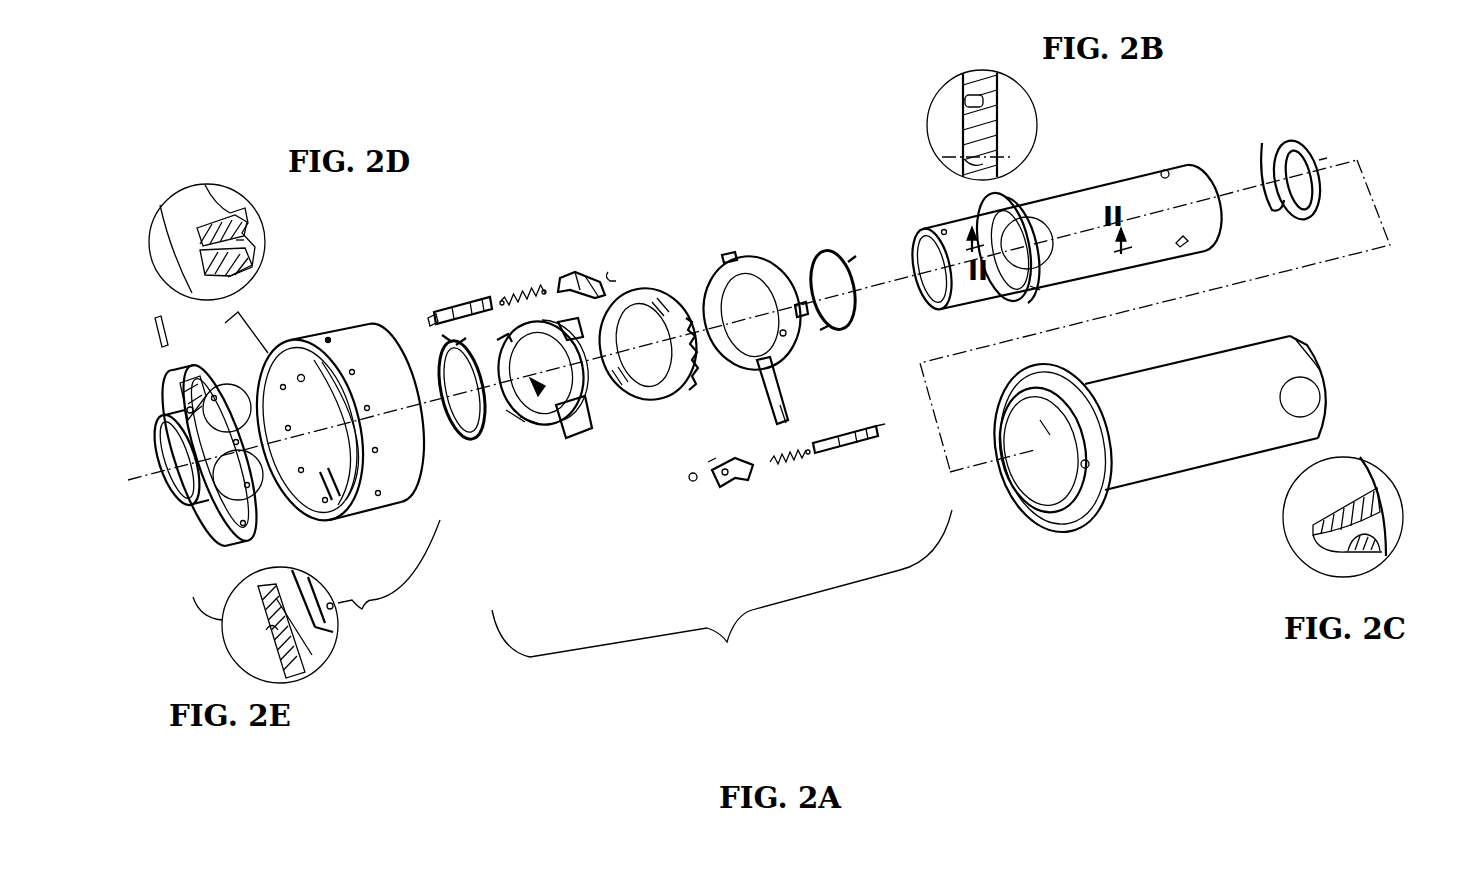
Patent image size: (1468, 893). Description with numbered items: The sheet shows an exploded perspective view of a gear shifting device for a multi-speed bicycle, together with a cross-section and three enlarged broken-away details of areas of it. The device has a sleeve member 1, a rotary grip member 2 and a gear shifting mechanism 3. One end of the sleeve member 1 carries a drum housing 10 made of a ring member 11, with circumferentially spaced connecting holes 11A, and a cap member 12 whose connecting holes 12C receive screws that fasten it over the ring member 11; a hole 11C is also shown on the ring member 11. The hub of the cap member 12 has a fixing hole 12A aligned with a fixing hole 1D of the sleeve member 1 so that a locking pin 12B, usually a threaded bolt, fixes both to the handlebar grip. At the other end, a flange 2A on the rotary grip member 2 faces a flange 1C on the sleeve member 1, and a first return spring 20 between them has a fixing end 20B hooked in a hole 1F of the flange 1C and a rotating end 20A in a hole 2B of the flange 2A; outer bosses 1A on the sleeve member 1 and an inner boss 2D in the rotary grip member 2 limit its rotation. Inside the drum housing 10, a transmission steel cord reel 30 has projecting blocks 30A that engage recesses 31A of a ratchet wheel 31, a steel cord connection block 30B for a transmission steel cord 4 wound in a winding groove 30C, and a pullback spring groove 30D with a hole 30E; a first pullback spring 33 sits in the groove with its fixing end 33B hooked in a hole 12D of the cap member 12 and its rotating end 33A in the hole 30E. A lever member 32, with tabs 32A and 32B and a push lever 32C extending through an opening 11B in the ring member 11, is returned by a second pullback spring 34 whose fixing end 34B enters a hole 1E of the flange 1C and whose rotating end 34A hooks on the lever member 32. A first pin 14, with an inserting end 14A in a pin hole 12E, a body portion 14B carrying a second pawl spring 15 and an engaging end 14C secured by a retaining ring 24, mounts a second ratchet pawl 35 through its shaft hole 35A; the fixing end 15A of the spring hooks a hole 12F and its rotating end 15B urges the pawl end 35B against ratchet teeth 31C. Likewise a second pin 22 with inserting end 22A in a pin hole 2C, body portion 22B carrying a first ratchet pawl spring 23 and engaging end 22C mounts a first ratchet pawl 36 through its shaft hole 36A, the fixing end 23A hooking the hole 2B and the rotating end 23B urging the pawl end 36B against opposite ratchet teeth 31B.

In FIG. 2A, the sleeve member 1 is at (1118, 187).
In FIG. 2A, the outer bosses 1A is at (1166, 170).
In FIG. 2A, the flange 1C is at (1032, 287).
In FIG. 2A, the fixing hole 1D is at (943, 229).
In FIG. 2A, the hole 1E is at (1022, 203).
In FIG. 2B, the hole 1E is at (976, 96).
In FIG. 2A, the hole 1F is at (1040, 250).
In FIG. 2B, the hole 1F is at (955, 157).
In FIG. 2A, the rotary grip member 2 is at (1188, 470).
In FIG. 2A, the flange 2A is at (1096, 432).
In FIG. 2A, the hole 2B is at (1042, 500).
In FIG. 2A, the pin hole 2C is at (1088, 469).
In FIG. 2A, the inner boss 2D is at (1307, 383).
In FIG. 2C, the inner boss 2D is at (1385, 553).
In FIG. 2A, the gear shifting mechanism 3 is at (722, 593).
In FIG. 2A, the transmission steel cord 4 is at (247, 327).
In FIG. 2A, the drum housing 10 is at (316, 586).
In FIG. 2A, the ring member 11 is at (396, 500).
In FIG. 2A, the connecting holes 11A is at (328, 340).
In FIG. 2A, the opening 11B is at (332, 505).
In FIG. 2A, the housing hole 11C is at (300, 374).
In FIG. 2A, the cap member 12 is at (200, 516).
In FIG. 2A, the fixing hole 12A is at (167, 398).
In FIG. 2A, the locking pin 12B is at (172, 362).
In FIG. 2A, the connecting holes 12C is at (240, 532).
In FIG. 2E, the hole 12D is at (300, 662).
In FIG. 2D, the pin hole 12E is at (223, 228).
In FIG. 2D, the hole 12F is at (240, 247).
In FIG. 2A, the first pin 14 is at (455, 310).
In FIG. 2A, the inserting end 14A is at (432, 318).
In FIG. 2A, the body portion 14B is at (460, 300).
In FIG. 2A, the engaging end 14C is at (482, 300).
In FIG. 2A, the second pawl spring 15 is at (503, 322).
In FIG. 2A, the fixing end 15A is at (507, 292).
In FIG. 2A, the rotating end 15B is at (543, 290).
In FIG. 2A, the first return spring 20 is at (1304, 150).
In FIG. 2A, the rotating end 20A is at (1320, 166).
In FIG. 2A, the fixing end 20B is at (1264, 168).
In FIG. 2A, the second pin 22 is at (842, 450).
In FIG. 2A, the inserting end 22A is at (880, 434).
In FIG. 2A, the body portion 22B is at (850, 432).
In FIG. 2A, the engaging end 22C is at (848, 446).
In FIG. 2A, the first ratchet pawl spring 23 is at (755, 448).
In FIG. 2A, the fixing end 23A is at (803, 452).
In FIG. 2A, the rotating end 23B is at (754, 417).
In FIG. 2A, the retaining ring 24 is at (616, 277).
In FIG. 2A, the transmission steel cord reel 30 is at (586, 392).
In FIG. 2A, the projecting blocks 30A is at (560, 432).
In FIG. 2A, the steel cord connection block 30B is at (580, 426).
In FIG. 2A, the winding groove 30C is at (592, 424).
In FIG. 2A, the pullback spring groove 30D is at (542, 426).
In FIG. 2A, the hole 30E is at (495, 383).
In FIG. 2A, the ratchet wheel 31 is at (638, 398).
In FIG. 2A, the recesses 31A is at (662, 306).
In FIG. 2A, the ratchet teeth 31B is at (690, 368).
In FIG. 2A, the ratchet teeth 31C is at (497, 346).
In FIG. 2A, the lever member 32 is at (788, 352).
In FIG. 2A, the lever ring tab 32A is at (805, 303).
In FIG. 2A, the lever ring tab 32B is at (729, 255).
In FIG. 2A, the push lever 32C is at (780, 337).
In FIG. 2A, the first pullback spring 33 is at (476, 447).
In FIG. 2A, the rotating end 33A is at (497, 395).
In FIG. 2A, the fixing end 33B is at (450, 415).
In FIG. 2A, the second pullback spring 34 is at (829, 256).
In FIG. 2A, the rotating end 34A is at (822, 330).
In FIG. 2A, the fixing end 34B is at (850, 272).
In FIG. 2A, the second ratchet pawl 35 is at (603, 356).
In FIG. 2A, the shaft hole 35A is at (592, 276).
In FIG. 2A, the pawl end 35B is at (600, 276).
In FIG. 2A, the first ratchet pawl 36 is at (742, 480).
In FIG. 2A, the shaft hole 36A is at (708, 466).
In FIG. 2A, the pawl end 36B is at (712, 478).